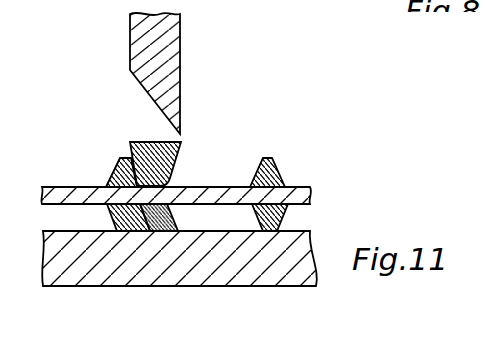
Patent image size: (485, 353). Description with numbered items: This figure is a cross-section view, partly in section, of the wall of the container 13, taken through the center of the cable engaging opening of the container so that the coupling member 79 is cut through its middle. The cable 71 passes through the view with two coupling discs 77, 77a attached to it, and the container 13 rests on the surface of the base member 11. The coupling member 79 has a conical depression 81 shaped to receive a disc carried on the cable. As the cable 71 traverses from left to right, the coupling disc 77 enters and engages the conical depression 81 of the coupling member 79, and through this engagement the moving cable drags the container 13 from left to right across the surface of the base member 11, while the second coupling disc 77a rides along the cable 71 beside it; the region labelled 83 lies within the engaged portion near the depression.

The base member 11 is at (219, 273).
The container 13 is at (173, 43).
The cable 71 is at (173, 175).
The coupling disc 77 is at (119, 173).
The coupling disc 77a is at (267, 158).
The coupling member 79 is at (150, 142).
The conical depression 81 is at (175, 172).
The flared foot 83 is at (160, 220).